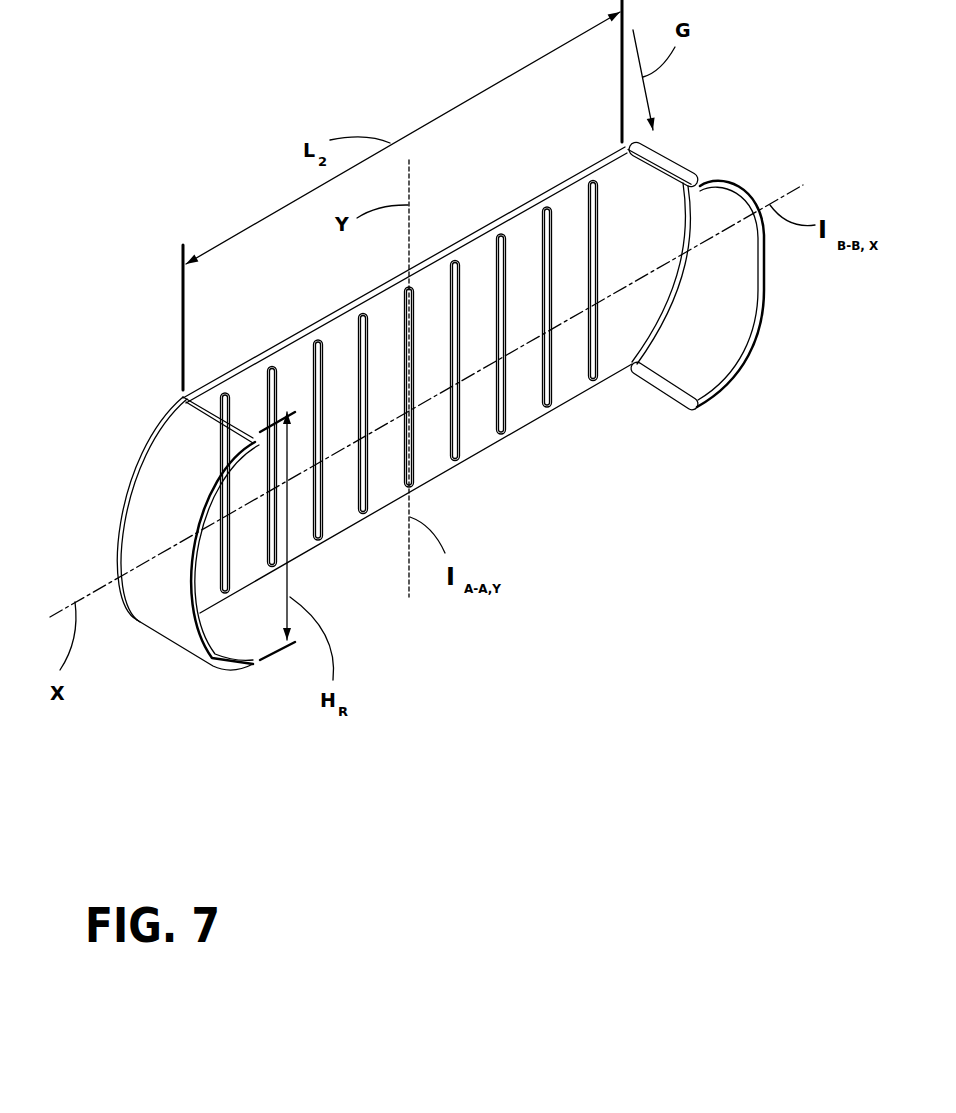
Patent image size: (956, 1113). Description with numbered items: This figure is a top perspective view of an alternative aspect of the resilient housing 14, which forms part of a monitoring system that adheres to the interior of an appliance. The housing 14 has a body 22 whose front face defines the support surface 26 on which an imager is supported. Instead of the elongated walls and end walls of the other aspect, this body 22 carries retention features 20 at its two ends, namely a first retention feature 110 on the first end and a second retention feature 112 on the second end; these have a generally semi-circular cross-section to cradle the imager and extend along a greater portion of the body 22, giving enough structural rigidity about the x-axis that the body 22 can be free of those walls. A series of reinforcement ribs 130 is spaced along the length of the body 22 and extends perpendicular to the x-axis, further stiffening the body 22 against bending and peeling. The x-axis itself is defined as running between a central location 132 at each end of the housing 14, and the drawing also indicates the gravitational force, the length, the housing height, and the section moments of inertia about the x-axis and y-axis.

The resilient housing 14 is at (97, 320).
The retention features 20 is at (163, 467).
The body 22 is at (342, 512).
The support surface 26 is at (637, 222).
The first retention feature 110 is at (148, 538).
The second retention feature 112 is at (760, 317).
The reinforcement ribs 130 is at (507, 267).
The central location 132 is at (683, 280).